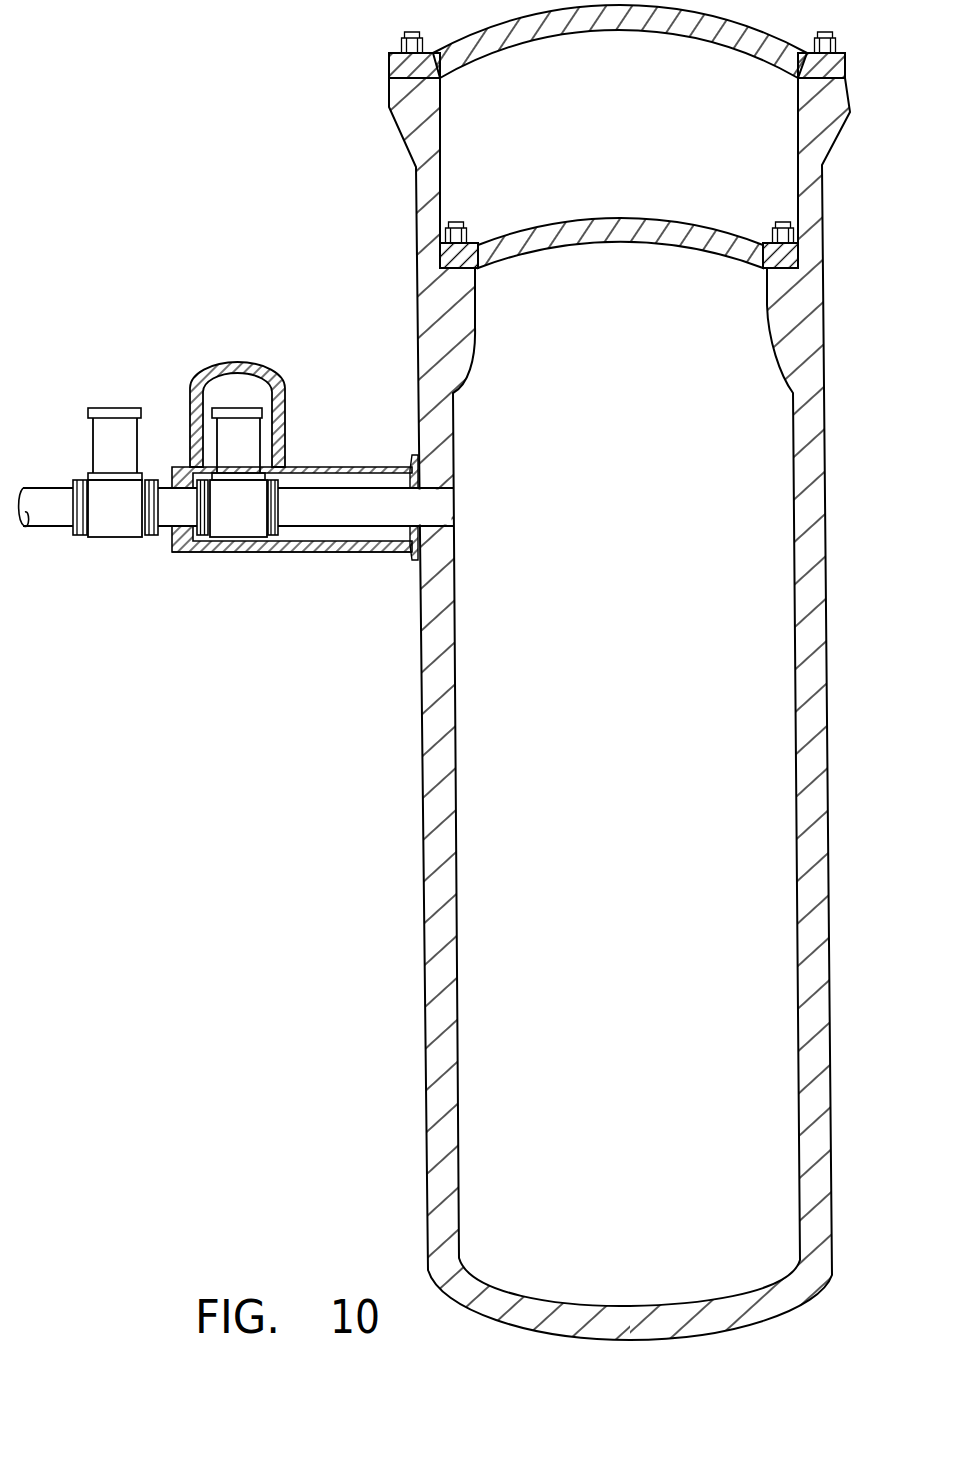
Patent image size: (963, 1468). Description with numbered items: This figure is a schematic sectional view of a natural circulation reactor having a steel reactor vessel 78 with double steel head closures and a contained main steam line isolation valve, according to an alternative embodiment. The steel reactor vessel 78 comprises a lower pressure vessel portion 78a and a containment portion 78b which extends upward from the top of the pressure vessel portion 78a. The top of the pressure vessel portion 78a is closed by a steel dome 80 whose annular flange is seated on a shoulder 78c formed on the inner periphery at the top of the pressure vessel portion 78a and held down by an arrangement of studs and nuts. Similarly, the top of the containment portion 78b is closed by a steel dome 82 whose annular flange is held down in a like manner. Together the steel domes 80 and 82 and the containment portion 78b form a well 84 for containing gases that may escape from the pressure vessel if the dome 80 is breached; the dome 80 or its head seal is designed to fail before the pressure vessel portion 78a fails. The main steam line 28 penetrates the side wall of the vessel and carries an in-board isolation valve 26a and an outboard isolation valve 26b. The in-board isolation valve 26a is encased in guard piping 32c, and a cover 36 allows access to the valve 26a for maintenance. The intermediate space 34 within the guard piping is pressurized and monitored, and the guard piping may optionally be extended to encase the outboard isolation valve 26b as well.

The steel reactor vessel 78 is at (566, 696).
The pressure vessel portion 78a is at (422, 737).
The containment portion 78b is at (417, 183).
The shoulder 78c is at (750, 263).
The steel dome 82 is at (675, 37).
The well 84 is at (605, 142).
The steel dome 80 is at (560, 218).
The main steam line 28 is at (357, 517).
The intermediate space 34 is at (315, 541).
The guard piping 32c is at (290, 553).
The cover 36 is at (238, 362).
The isolation valve 26a is at (260, 435).
The isolation valve 26b is at (92, 450).